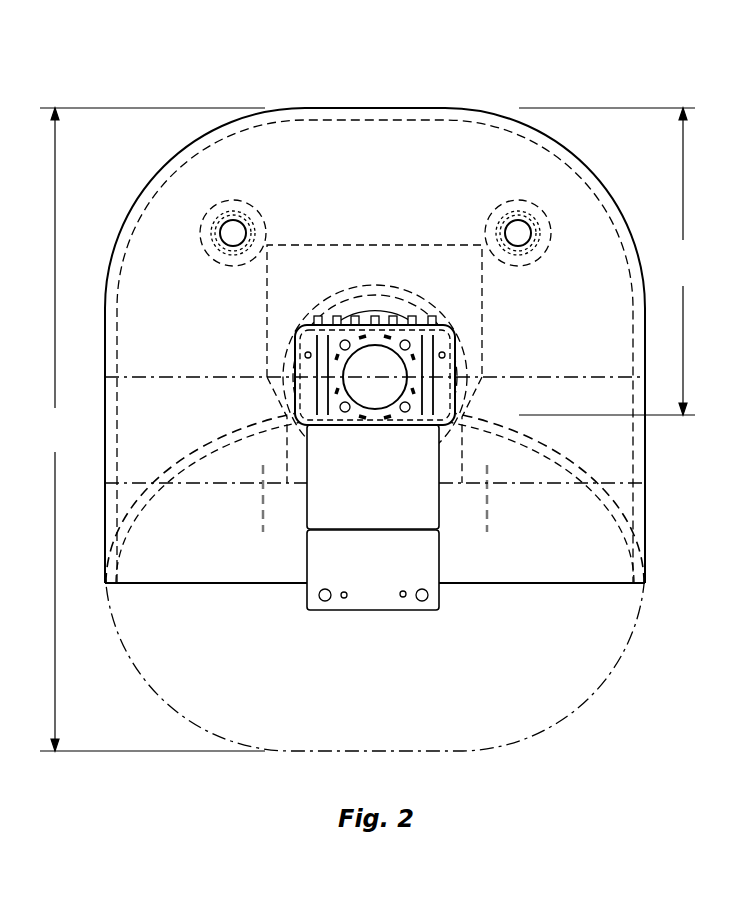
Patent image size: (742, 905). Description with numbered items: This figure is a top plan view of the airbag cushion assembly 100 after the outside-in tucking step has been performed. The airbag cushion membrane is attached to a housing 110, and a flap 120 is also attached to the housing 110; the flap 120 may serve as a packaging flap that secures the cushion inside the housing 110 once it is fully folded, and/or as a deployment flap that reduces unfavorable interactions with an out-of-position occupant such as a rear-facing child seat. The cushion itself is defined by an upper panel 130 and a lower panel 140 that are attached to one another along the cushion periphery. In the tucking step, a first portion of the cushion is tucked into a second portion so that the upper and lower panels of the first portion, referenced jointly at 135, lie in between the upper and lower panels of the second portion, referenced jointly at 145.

The airbag cushion assembly 100 is at (377, 389).
The housing 110 is at (452, 366).
The flap 120 is at (373, 585).
The upper panel 130 is at (605, 272).
The upper and lower panels of the first portion 135 is at (530, 565).
The lower panel 140 is at (200, 163).
The upper and lower panels of the second portion 145 is at (630, 508).